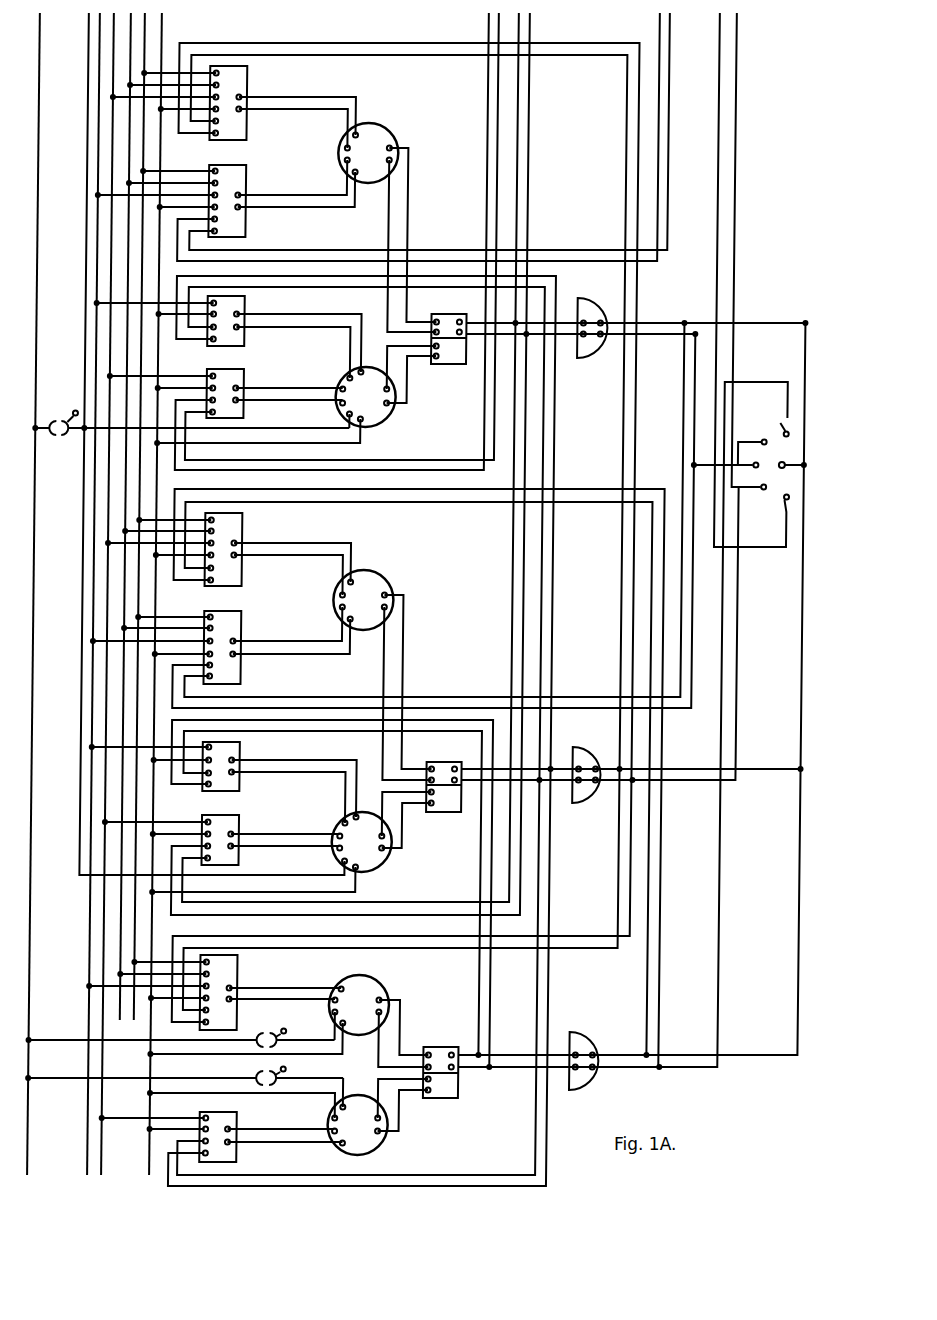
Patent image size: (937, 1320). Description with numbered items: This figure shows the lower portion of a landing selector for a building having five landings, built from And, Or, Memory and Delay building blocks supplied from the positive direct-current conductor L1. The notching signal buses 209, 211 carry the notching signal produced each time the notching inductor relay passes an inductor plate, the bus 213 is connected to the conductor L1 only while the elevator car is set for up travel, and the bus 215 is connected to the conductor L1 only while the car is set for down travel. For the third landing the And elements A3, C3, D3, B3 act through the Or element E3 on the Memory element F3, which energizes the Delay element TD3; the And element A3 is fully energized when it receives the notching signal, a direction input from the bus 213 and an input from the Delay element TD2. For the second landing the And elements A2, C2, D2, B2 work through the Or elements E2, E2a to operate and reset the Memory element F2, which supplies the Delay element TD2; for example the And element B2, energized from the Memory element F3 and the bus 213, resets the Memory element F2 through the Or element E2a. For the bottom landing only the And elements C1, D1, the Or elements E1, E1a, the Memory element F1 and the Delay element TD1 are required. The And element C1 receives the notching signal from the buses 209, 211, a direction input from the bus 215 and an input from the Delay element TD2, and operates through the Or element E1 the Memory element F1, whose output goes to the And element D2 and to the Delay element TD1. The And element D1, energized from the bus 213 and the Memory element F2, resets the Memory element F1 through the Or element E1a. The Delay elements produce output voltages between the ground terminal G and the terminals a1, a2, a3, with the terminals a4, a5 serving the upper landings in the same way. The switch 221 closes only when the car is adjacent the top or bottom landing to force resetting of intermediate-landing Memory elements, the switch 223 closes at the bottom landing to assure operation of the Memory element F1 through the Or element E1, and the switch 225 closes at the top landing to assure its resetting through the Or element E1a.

The supply conductor L1 is at (40, 22).
The notching signal bus 209 is at (144, 276).
The notching signal bus 211 is at (130, 259).
The bus 213 is at (113, 243).
The bus 215 is at (99, 220).
The switch 221 is at (73, 421).
The switch 223 is at (282, 1028).
The switch 225 is at (272, 1076).
The And element A3 is at (249, 76).
The And element C3 is at (249, 226).
The And element D3 is at (249, 302).
The And element B3 is at (249, 412).
The Or element E3 is at (399, 123).
The Memory element F3 is at (457, 313).
The Delay element TD3 is at (586, 359).
The And element A2 is at (249, 522).
The And element C2 is at (249, 670).
The And element D2 is at (249, 748).
The And element B2 is at (249, 857).
The Or element E2 is at (392, 576).
The Or element E2a is at (393, 866).
The Memory element F2 is at (457, 762).
The Delay element TD2 is at (586, 804).
The And element C1 is at (249, 970).
The And element D1 is at (250, 1154).
The Or element E1 is at (392, 983).
The Or element E1a is at (393, 1147).
The Memory element F1 is at (456, 1047).
The Delay element TD1 is at (600, 1022).
The ground terminal G is at (790, 457).
The terminal a1 is at (777, 421).
The terminal a2 is at (766, 440).
The terminal a3 is at (735, 473).
The terminal a4 is at (767, 490).
The terminal a5 is at (789, 500).